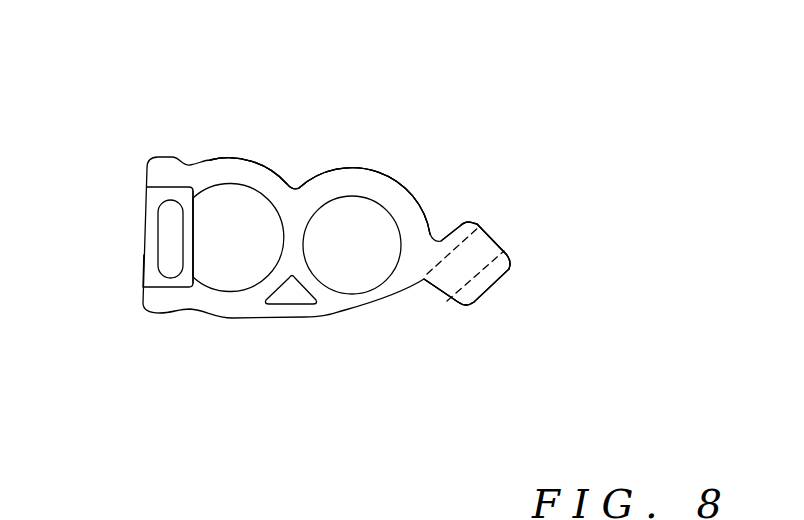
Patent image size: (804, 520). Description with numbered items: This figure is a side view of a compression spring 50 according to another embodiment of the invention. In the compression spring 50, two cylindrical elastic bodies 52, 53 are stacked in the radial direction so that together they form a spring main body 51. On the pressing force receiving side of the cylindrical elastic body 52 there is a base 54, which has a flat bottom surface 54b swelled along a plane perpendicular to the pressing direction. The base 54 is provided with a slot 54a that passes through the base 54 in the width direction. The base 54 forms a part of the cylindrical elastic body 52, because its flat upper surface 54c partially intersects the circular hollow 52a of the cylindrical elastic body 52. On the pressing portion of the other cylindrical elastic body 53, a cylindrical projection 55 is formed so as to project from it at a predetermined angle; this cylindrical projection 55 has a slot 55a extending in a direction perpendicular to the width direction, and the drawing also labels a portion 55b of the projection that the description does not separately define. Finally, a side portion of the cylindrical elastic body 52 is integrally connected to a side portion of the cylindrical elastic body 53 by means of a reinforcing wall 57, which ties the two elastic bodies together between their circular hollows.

The compression spring 50 is at (220, 118).
The spring main body 51 is at (345, 82).
The cylindrical elastic body 52 is at (238, 155).
The circular hollow 52a is at (228, 276).
The cylindrical elastic body 53 is at (352, 172).
The base 54 is at (148, 192).
The slot 54a is at (165, 237).
The flat bottom surface 54b is at (142, 270).
The flat upper surface 54c is at (194, 223).
The cylindrical projection 55 is at (490, 234).
The slot 55a is at (436, 291).
The tip portion 55b is at (492, 288).
The reinforcing wall 57 is at (287, 318).